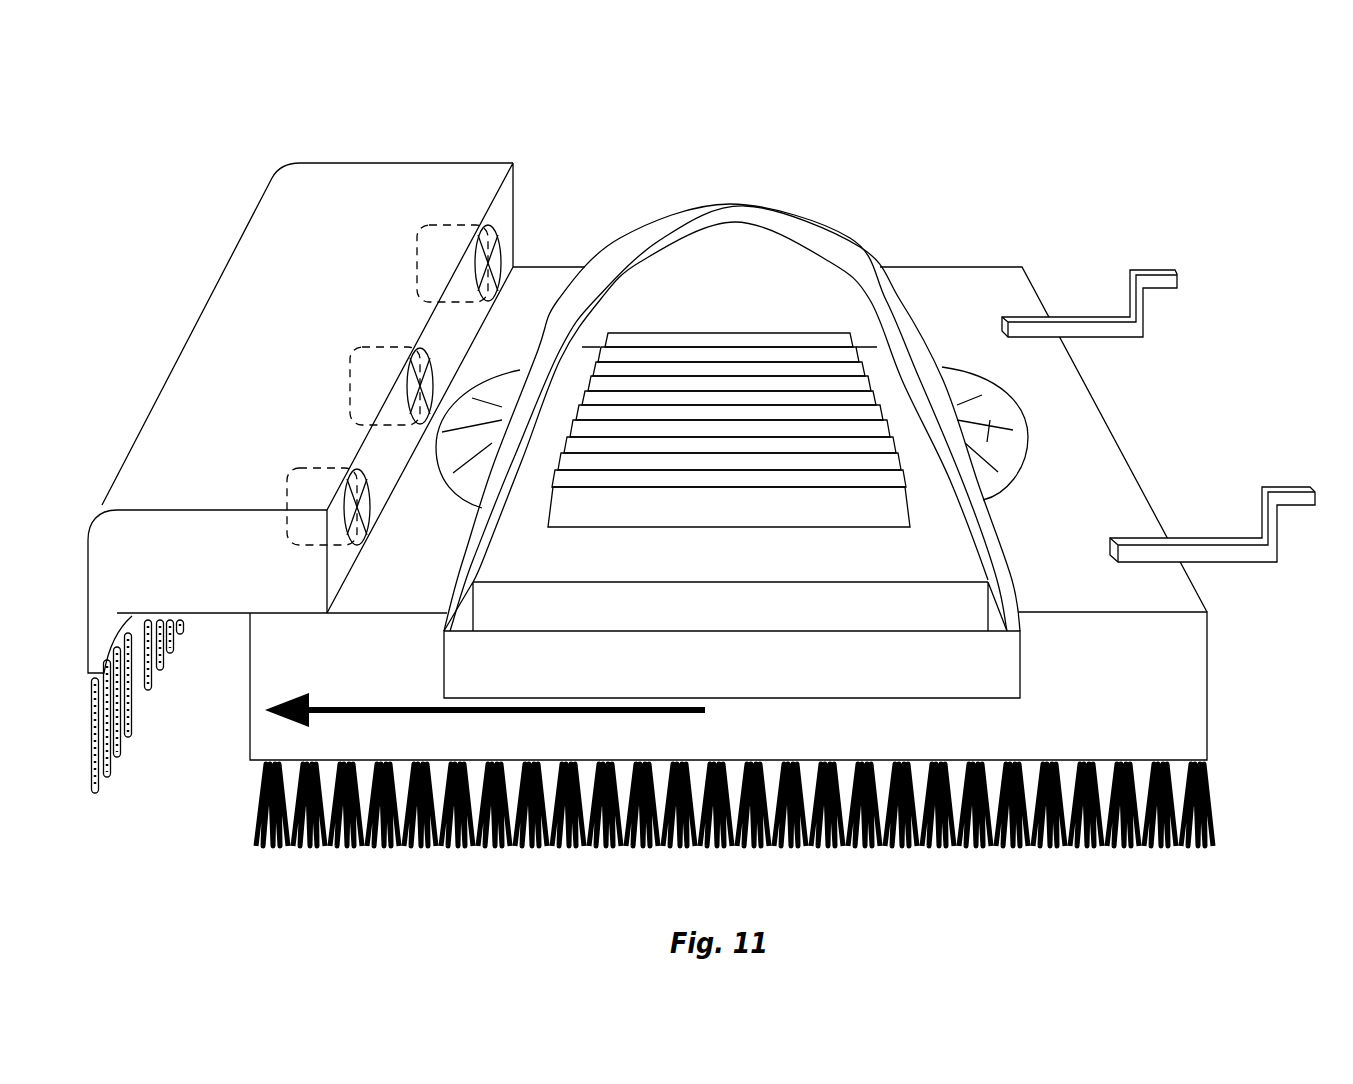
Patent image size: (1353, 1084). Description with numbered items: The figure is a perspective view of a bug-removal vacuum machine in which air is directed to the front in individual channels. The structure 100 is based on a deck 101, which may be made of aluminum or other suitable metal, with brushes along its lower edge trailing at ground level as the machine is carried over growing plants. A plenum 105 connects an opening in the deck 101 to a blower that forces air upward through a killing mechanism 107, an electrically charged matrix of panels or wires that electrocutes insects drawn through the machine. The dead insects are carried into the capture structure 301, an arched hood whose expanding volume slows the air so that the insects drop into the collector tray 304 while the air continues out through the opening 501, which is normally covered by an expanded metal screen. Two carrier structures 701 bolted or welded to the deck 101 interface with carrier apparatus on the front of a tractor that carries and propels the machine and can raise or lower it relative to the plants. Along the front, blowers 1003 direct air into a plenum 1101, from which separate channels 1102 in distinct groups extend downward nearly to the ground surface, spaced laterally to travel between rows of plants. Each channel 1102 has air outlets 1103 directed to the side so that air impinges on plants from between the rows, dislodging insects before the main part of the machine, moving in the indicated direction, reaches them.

The structure 100 is at (605, 155).
The deck 101 is at (928, 278).
The plenum 105 is at (988, 415).
The killing mechanism 107 is at (704, 333).
The capture structure 301 is at (748, 170).
The collector tray 304 is at (1022, 650).
The opening 501 is at (752, 265).
The carrier structure 701 is at (1152, 268).
The blower 1003 is at (314, 478).
The plenum 1101 is at (323, 190).
The channel 1102 is at (140, 718).
The air outlet 1103 is at (150, 688).